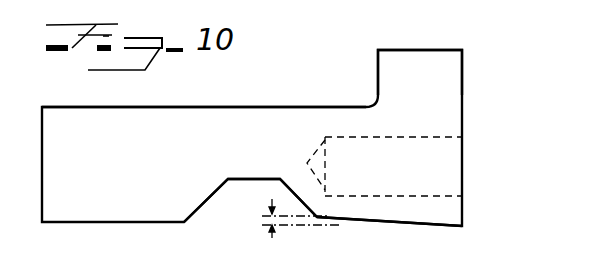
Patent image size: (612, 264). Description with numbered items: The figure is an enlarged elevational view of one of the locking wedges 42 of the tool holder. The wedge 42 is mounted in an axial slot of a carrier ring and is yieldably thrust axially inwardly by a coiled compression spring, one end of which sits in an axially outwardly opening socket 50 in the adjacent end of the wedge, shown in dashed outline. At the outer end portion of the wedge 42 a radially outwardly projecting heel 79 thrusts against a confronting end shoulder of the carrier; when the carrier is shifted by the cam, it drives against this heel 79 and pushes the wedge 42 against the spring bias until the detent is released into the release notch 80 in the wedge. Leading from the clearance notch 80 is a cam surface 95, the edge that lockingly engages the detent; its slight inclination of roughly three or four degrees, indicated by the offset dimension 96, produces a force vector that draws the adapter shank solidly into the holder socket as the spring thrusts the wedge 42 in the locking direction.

The wedge 42 is at (263, 117).
The heel 79 is at (403, 60).
The release notch 80 is at (242, 181).
The socket 50 is at (412, 140).
The cam surface 95 is at (338, 219).
The offset dimension 96 is at (270, 218).